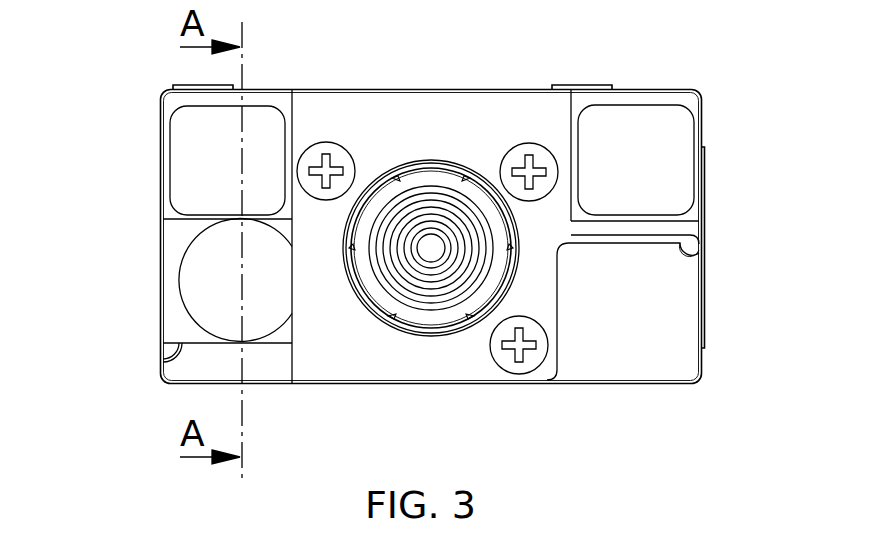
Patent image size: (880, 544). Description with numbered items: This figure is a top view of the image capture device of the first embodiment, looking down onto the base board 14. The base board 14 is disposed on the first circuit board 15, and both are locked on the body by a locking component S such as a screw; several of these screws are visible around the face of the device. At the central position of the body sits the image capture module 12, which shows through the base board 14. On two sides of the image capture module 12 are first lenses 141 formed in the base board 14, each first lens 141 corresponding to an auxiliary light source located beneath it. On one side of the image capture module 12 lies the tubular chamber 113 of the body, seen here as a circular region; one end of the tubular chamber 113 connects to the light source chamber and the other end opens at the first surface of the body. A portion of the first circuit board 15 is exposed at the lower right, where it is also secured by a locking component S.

The base board 14 is at (392, 92).
The first lens 141 is at (200, 135).
The tubular chamber 113 is at (195, 272).
The image capture module 12 is at (442, 180).
The first circuit board 15 is at (637, 311).
The locking component S is at (317, 157).